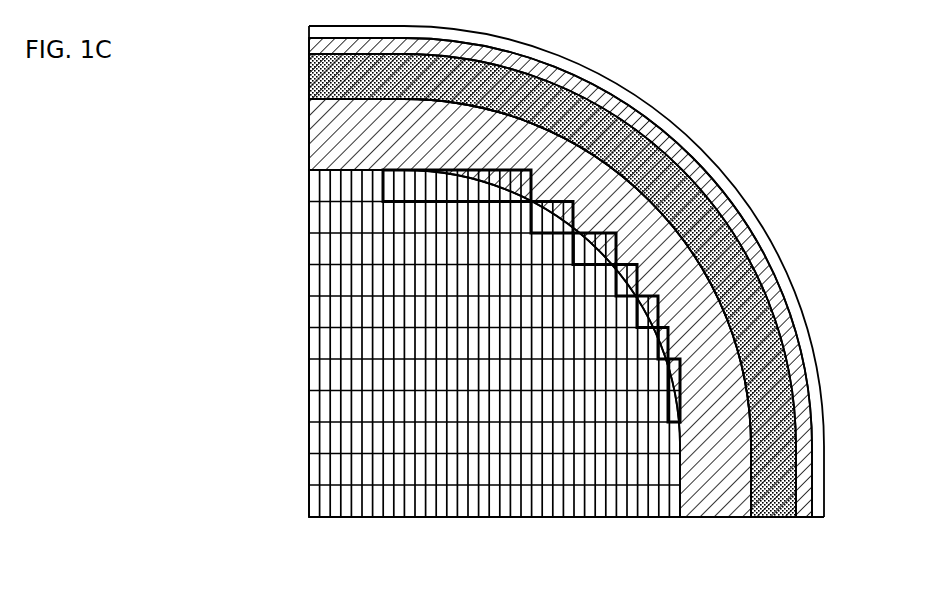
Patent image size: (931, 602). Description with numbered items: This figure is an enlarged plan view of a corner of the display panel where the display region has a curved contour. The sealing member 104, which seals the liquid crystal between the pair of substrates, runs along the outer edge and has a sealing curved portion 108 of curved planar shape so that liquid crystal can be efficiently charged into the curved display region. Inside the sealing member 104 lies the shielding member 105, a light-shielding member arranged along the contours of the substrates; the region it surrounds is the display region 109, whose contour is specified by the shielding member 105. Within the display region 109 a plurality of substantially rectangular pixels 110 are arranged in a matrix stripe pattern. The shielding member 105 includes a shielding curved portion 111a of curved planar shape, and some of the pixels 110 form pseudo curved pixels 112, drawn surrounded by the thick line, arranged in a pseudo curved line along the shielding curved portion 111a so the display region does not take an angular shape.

The sealing member 104 is at (772, 500).
The shielding member 105 is at (700, 502).
The sealing curved portion 108 is at (753, 237).
The display region 109 is at (293, 388).
The pixel 110 is at (380, 508).
The shielding curved portion 111a is at (657, 217).
The pseudo curved pixels 112 is at (605, 170).